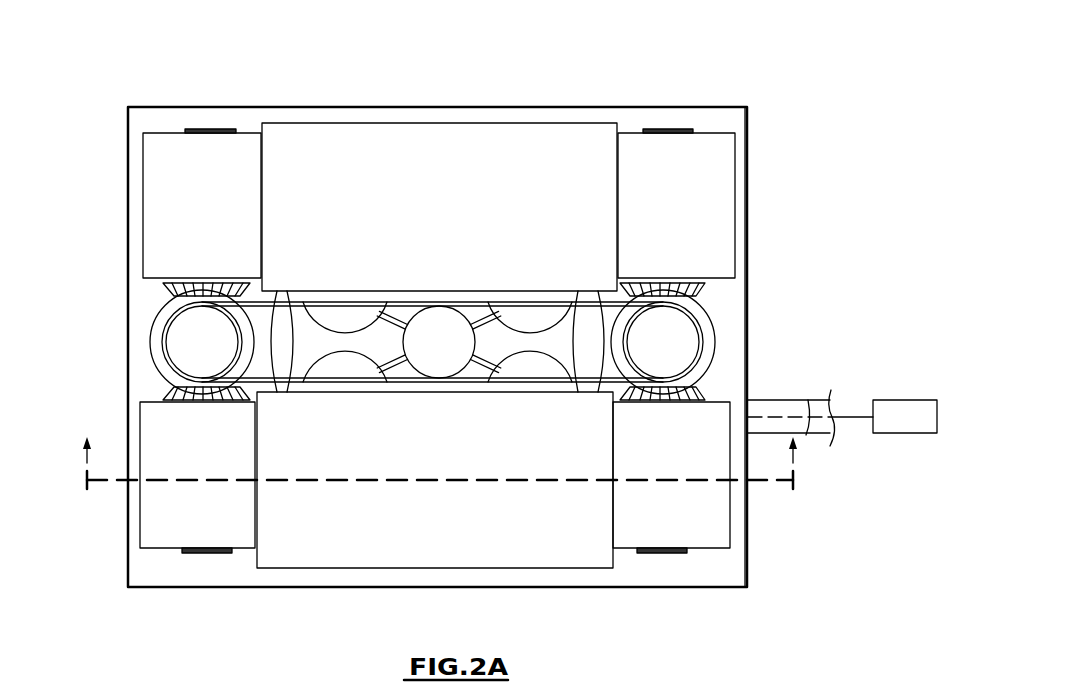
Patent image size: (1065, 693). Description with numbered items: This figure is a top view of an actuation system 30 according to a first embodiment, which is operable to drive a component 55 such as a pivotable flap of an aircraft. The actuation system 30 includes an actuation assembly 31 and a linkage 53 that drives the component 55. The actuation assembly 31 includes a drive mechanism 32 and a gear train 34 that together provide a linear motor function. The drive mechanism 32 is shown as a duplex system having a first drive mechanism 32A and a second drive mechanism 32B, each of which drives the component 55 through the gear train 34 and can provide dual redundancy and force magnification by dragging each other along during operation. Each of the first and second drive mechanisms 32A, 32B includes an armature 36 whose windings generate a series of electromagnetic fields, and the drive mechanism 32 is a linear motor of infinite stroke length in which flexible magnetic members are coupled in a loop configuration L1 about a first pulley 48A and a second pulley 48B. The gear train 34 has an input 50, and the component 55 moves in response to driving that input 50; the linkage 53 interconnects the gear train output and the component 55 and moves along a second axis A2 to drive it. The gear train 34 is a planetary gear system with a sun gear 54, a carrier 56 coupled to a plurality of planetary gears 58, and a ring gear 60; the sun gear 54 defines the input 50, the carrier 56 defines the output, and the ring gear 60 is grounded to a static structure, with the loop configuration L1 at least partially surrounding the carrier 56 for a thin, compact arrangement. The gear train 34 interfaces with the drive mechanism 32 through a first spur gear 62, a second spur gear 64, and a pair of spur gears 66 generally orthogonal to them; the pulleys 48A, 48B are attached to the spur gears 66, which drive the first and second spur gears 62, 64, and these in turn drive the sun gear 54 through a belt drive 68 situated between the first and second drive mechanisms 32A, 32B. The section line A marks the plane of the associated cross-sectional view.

The actuation system 30 is at (93, 53).
The actuation assembly 31 is at (166, 83).
The drive mechanism 32 is at (508, 516).
The first drive mechanism 32A is at (435, 516).
The second drive mechanism 32B is at (758, 230).
The gear train 34 is at (432, 298).
The input 50 is at (463, 292).
The armature 36 is at (585, 580).
The first pulley 48A is at (207, 553).
The second pulley 48B is at (678, 553).
The linkage 53 is at (808, 395).
The component 55 is at (920, 429).
The sun gear 54 is at (427, 313).
The carrier 56 is at (398, 302).
The planetary gears 58 is at (343, 335).
The ring gear 60 is at (250, 388).
The first spur gear 62 is at (152, 320).
The second spur gear 64 is at (716, 342).
The spur gears 66 is at (165, 288).
The belt drive 68 is at (482, 302).
The second axis A2 is at (816, 437).
The loop configuration L1 is at (740, 505).
The section line A is at (440, 465).